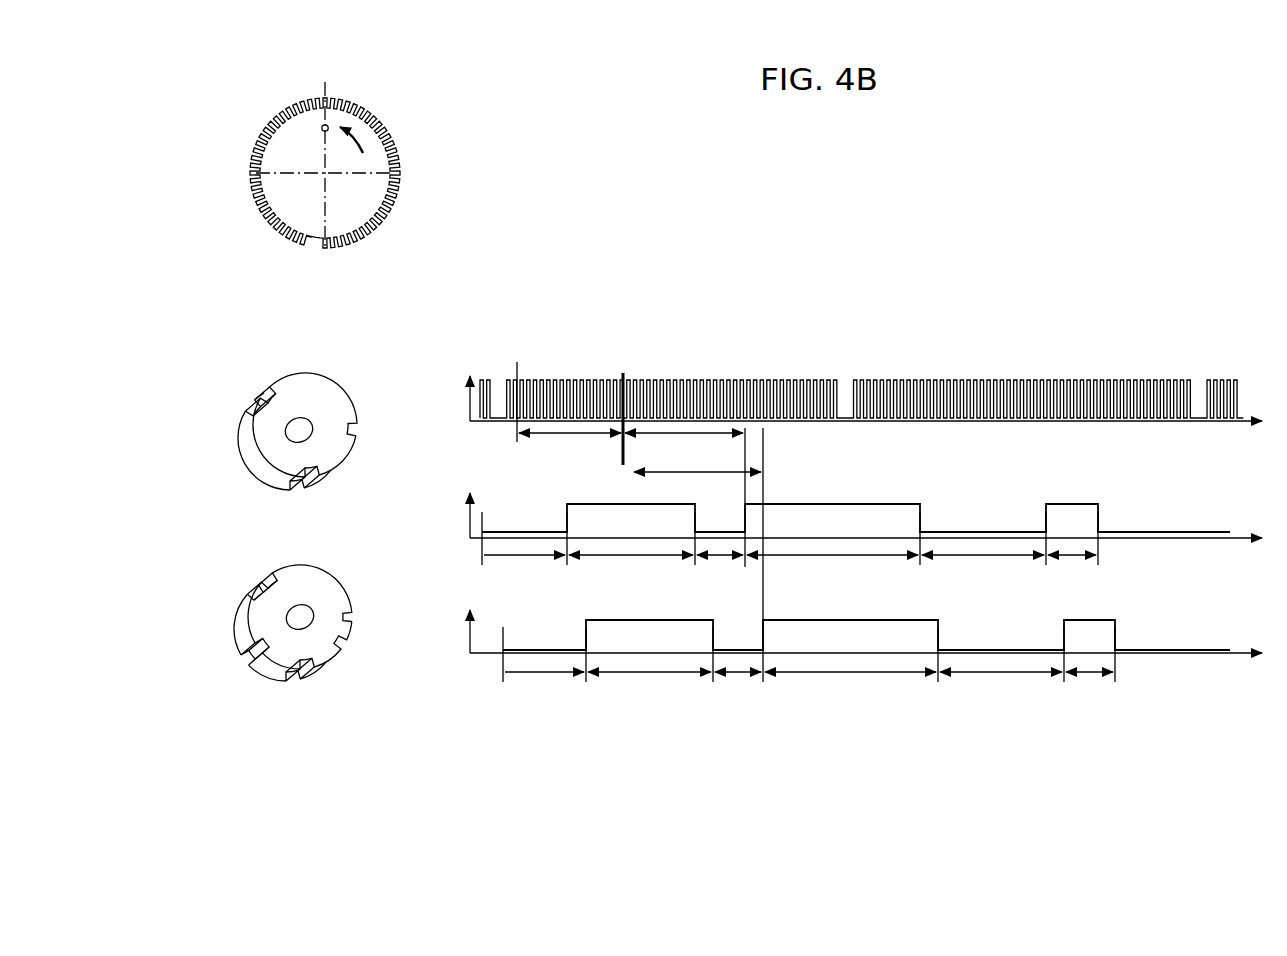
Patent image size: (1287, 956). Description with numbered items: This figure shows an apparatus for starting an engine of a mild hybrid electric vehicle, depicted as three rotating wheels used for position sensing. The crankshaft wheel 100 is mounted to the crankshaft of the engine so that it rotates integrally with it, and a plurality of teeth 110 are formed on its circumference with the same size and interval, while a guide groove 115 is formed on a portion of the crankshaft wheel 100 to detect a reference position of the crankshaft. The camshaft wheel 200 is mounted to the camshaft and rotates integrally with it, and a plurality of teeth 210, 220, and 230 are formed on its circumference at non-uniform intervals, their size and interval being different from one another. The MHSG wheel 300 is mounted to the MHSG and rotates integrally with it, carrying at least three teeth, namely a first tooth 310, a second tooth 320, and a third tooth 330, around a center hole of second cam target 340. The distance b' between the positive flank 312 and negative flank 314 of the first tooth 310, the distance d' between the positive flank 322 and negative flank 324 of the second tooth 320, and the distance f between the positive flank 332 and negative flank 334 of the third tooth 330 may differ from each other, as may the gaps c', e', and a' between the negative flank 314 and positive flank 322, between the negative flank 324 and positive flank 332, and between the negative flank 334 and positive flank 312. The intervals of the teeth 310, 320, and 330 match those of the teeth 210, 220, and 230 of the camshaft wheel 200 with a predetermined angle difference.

The crankshaft wheel 100 is at (248, 206).
The teeth 110 is at (325, 100).
The guide groove 115 is at (305, 247).
The camshaft wheel 200 is at (230, 461).
The tooth 210 is at (252, 405).
The tooth 220 is at (337, 474).
The tooth 230 is at (309, 388).
The MHSG wheel 300 is at (230, 584).
The first tooth 310 is at (247, 617).
The positive flank 312 is at (258, 655).
The negative flank 314 is at (260, 577).
The second tooth 320 is at (317, 575).
The positive flank 322 is at (270, 573).
The negative flank 324 is at (353, 622).
The third tooth 330 is at (337, 663).
The positive flank 332 is at (350, 645).
The negative flank 334 is at (310, 677).
The center hole of second cam target 340 is at (306, 616).